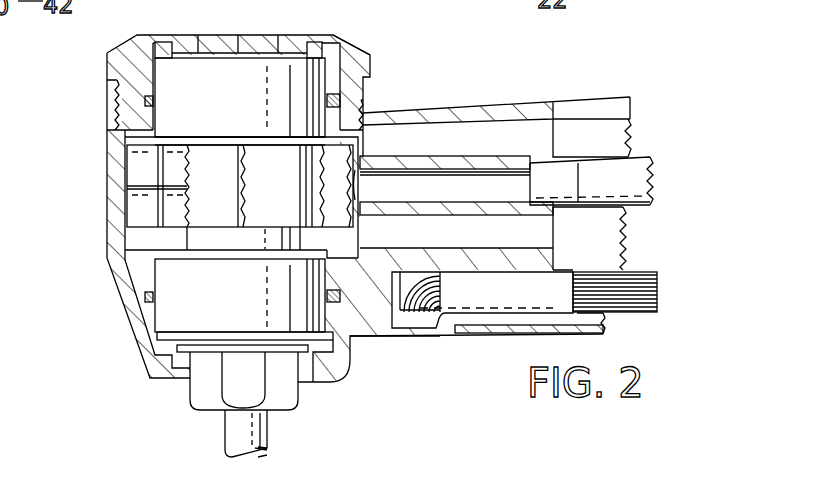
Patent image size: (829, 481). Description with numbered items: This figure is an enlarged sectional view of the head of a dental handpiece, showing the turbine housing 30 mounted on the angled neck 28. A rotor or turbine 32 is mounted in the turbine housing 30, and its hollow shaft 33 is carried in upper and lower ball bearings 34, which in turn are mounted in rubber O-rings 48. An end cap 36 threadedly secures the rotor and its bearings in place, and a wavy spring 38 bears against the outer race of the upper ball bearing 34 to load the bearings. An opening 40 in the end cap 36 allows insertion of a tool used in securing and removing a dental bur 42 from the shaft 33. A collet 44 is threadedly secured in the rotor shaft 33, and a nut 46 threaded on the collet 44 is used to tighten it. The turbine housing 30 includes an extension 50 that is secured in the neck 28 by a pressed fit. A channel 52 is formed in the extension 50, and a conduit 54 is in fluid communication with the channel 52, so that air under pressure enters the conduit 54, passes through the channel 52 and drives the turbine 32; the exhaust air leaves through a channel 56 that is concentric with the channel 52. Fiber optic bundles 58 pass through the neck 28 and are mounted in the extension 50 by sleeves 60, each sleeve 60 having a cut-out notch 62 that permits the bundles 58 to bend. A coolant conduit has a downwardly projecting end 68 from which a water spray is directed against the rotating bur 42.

The angled neck 28 is at (577, 102).
The turbine housing 30 is at (110, 205).
The rotor or turbine 32 is at (137, 173).
The hollow shaft 33 is at (183, 145).
The ball bearings 34 is at (247, 93).
The end cap 36 is at (350, 42).
The wavy spring 38 is at (165, 45).
The opening 40 is at (260, 38).
The dental bur 42 is at (267, 437).
The collet 44 is at (217, 342).
The nut 46 is at (300, 400).
The rubber O-rings 48 is at (140, 97).
The extension 50 is at (388, 115).
The channel 52 is at (435, 202).
The conduit 54 is at (650, 200).
The channel 56 is at (542, 143).
The fiber optic bundles 58 is at (657, 303).
The sleeve 60 is at (542, 300).
The cut-out notch 62 is at (437, 292).
The downwardly projecting end 68 is at (390, 338).